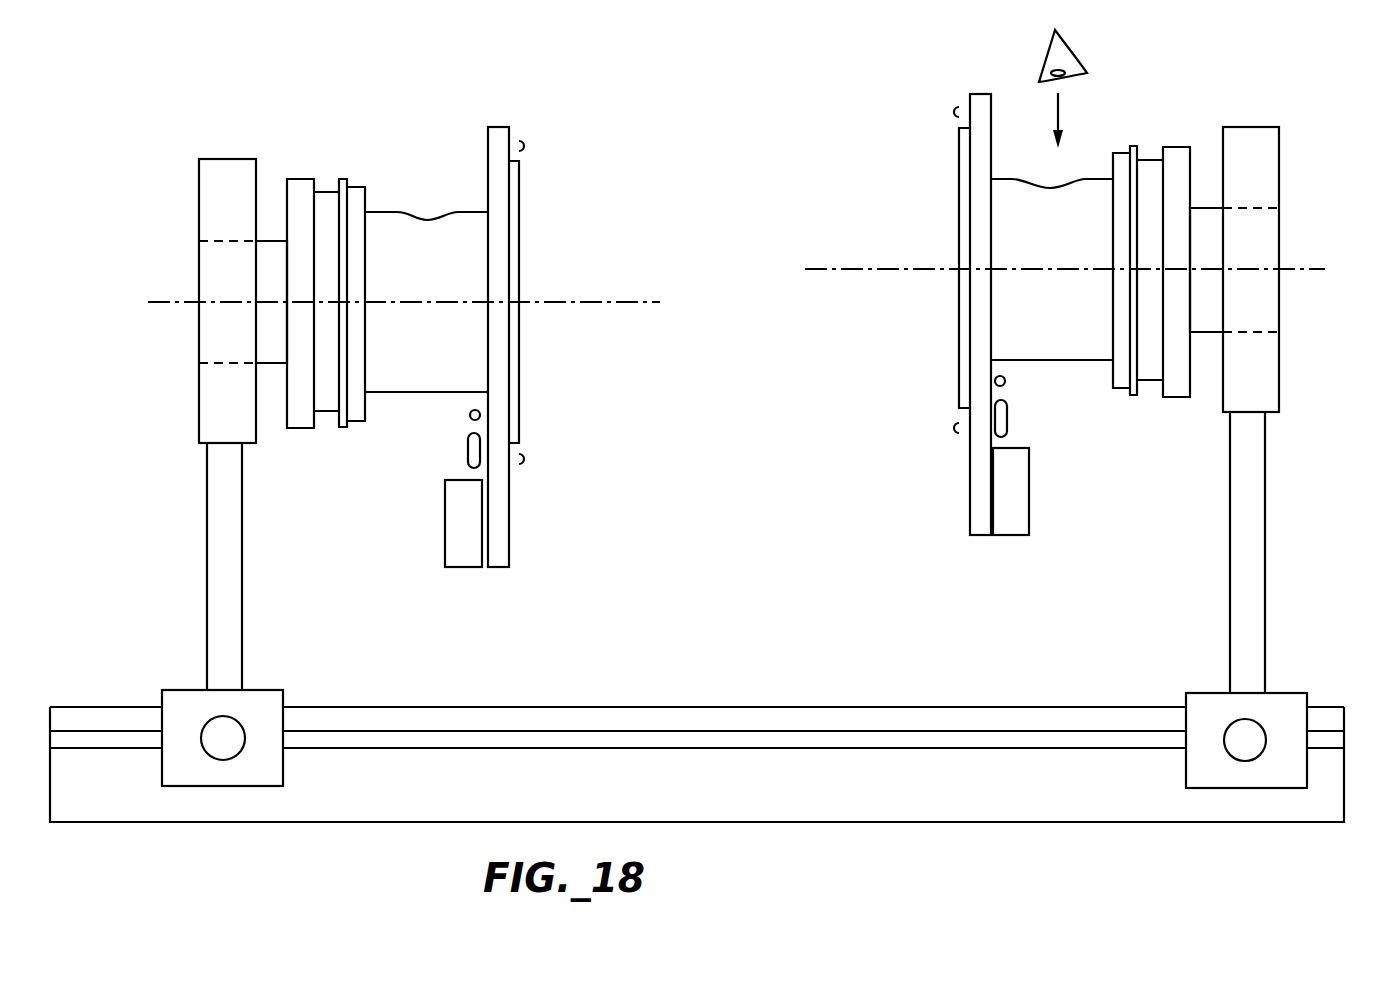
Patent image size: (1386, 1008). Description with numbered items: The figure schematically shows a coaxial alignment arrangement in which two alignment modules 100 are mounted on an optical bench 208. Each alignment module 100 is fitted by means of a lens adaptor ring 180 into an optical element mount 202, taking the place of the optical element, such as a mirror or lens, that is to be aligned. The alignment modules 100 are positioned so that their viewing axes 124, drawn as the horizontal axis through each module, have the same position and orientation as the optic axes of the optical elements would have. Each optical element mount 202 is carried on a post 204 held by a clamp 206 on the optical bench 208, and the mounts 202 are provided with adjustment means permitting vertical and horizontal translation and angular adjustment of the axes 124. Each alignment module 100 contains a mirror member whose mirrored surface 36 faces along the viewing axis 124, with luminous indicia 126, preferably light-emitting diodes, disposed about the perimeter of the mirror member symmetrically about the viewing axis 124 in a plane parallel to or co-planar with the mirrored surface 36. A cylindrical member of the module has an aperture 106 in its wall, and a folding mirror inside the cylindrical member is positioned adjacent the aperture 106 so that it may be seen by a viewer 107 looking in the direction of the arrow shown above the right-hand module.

The mirrored surface 36 is at (509, 360).
The alignment module 100 is at (420, 198).
The aperture 106 is at (1037, 185).
The viewer 107 is at (1075, 58).
The viewing axis 124 is at (575, 302).
The luminous indicia 126 is at (516, 140).
The lens adaptor ring 180 is at (274, 248).
The optical element mount 202 is at (218, 227).
The post 204 is at (216, 512).
The clamp 206 is at (237, 772).
The optical bench 208 is at (868, 803).